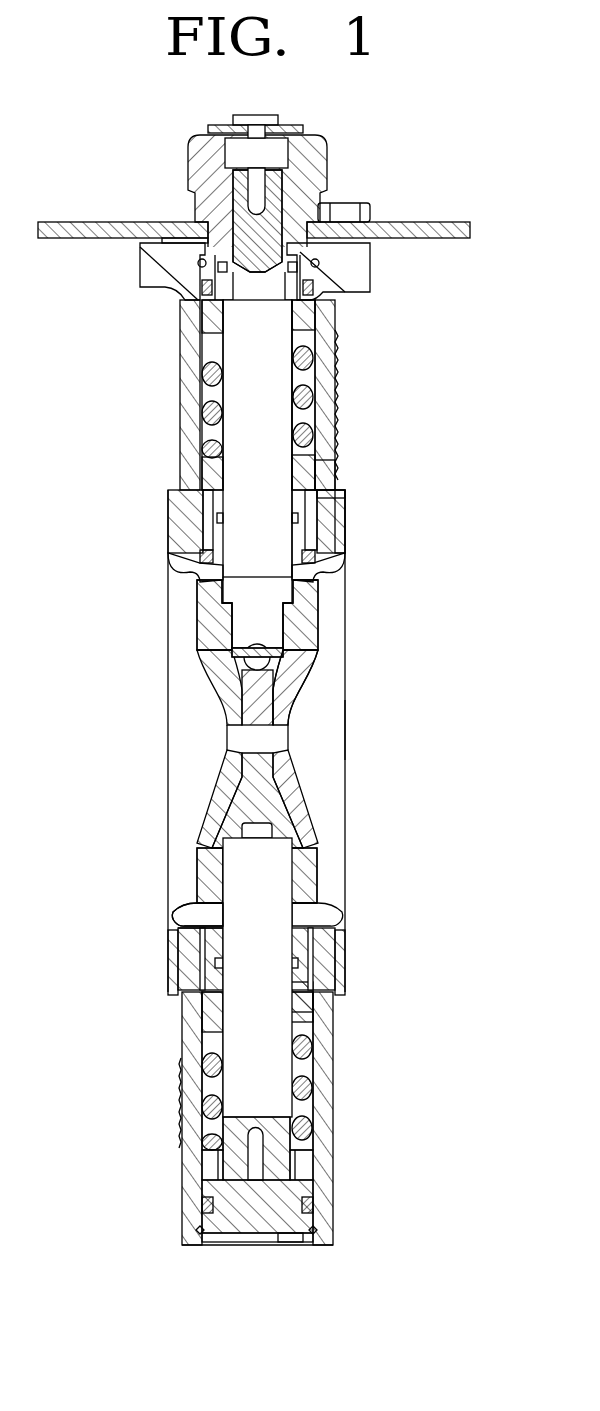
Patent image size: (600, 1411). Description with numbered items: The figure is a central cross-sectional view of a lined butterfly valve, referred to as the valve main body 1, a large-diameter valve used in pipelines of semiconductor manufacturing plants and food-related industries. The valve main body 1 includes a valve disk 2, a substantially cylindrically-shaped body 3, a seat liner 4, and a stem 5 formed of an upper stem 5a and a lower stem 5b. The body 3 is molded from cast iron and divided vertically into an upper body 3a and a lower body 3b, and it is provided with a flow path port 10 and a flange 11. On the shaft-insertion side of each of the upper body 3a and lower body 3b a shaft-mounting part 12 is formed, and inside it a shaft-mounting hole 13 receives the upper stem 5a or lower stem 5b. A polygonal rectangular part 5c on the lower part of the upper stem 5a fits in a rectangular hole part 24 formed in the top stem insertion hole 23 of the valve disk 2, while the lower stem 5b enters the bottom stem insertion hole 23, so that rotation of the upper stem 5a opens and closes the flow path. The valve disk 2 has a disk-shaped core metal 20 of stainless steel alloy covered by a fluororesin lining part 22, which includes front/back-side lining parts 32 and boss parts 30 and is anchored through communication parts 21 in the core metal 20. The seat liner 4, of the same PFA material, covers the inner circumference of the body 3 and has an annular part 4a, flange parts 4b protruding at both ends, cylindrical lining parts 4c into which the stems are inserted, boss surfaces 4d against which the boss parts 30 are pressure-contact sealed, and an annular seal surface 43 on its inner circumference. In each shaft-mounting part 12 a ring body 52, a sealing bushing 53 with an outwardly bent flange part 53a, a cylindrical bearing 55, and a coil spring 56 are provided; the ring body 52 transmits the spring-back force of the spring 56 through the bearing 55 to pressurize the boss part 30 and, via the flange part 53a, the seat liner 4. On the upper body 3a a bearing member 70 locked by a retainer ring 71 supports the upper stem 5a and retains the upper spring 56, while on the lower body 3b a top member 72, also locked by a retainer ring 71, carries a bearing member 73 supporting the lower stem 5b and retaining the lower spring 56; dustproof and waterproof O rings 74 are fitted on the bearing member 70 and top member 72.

The valve main body 1 is at (260, 716).
The valve disk 2 is at (330, 630).
The body 3 is at (193, 392).
The upper body 3a is at (337, 387).
The lower body 3b is at (192, 1042).
The seat liner 4 is at (192, 735).
The annular part 4a is at (335, 718).
The flange part 4b is at (343, 512).
The cylindrical lining part 4c is at (348, 570).
The boss surface 4d is at (200, 603).
The stem 5 is at (255, 350).
The upper stem 5a is at (258, 420).
The lower stem 5b is at (260, 1027).
The rectangular part 5c is at (220, 618).
The flow path port 10 is at (185, 922).
The flange 11 is at (345, 505).
The shaft-mounting part 12 is at (203, 488).
The shaft-mounting hole 13 is at (335, 468).
The core metal 20 is at (193, 638).
The communication part 21 is at (300, 757).
The lining part 22 is at (205, 835).
The stem insertion hole 23 is at (320, 613).
The rectangular hole part 24 is at (300, 665).
The boss part 30 is at (190, 912).
The front/back-side lining part 32 is at (300, 690).
The annular seal surface 43 is at (290, 600).
The ring body 52 is at (192, 523).
The sealing bushing 53 is at (330, 975).
The flange part 53a is at (345, 545).
The bearing 55 is at (205, 467).
The spring 56 is at (335, 350).
The bearing member 70 is at (183, 305).
The retainer ring 71 is at (198, 262).
The top member 72 is at (320, 1183).
The bearing member 73 is at (203, 1162).
The O ring 74 is at (376, 268).